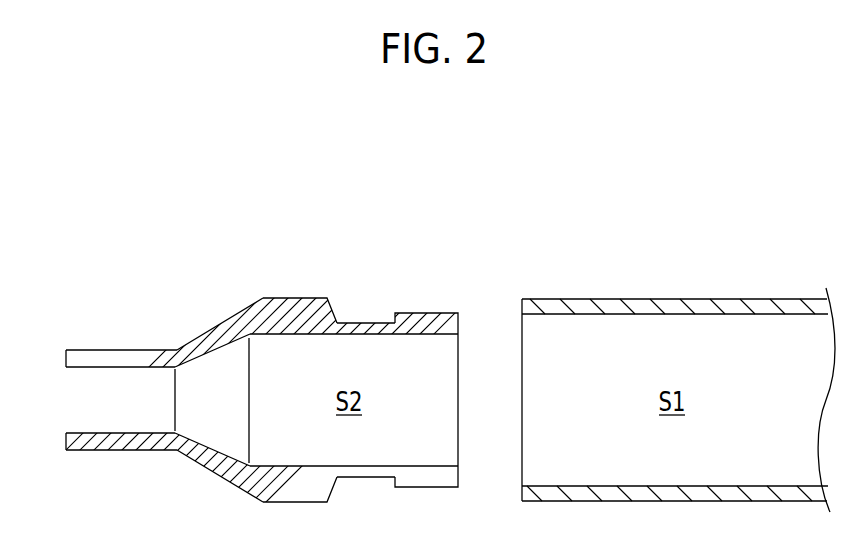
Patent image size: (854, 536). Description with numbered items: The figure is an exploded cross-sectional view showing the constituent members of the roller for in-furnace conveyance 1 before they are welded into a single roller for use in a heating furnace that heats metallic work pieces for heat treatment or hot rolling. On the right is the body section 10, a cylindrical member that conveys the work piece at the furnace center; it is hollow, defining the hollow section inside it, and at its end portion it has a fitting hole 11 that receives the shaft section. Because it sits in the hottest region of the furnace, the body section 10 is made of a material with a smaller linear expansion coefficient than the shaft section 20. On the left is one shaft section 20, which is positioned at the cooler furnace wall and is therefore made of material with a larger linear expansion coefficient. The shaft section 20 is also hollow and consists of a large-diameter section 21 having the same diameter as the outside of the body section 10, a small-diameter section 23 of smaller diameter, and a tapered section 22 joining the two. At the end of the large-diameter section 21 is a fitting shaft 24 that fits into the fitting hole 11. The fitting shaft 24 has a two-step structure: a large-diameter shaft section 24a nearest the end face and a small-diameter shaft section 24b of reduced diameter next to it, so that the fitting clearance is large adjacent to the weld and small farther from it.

The roller for in-furnace conveyance 1 is at (52, 283).
The body section 10 is at (685, 305).
The fitting hole 11 is at (537, 313).
The shaft section 20 is at (203, 343).
The large-diameter section 21 is at (292, 288).
The tapered section 22 is at (226, 308).
The small-diameter section 23 is at (116, 340).
The fitting shaft 24 is at (424, 328).
The large-diameter shaft section 24a is at (430, 303).
The small-diameter shaft section 24b is at (368, 313).